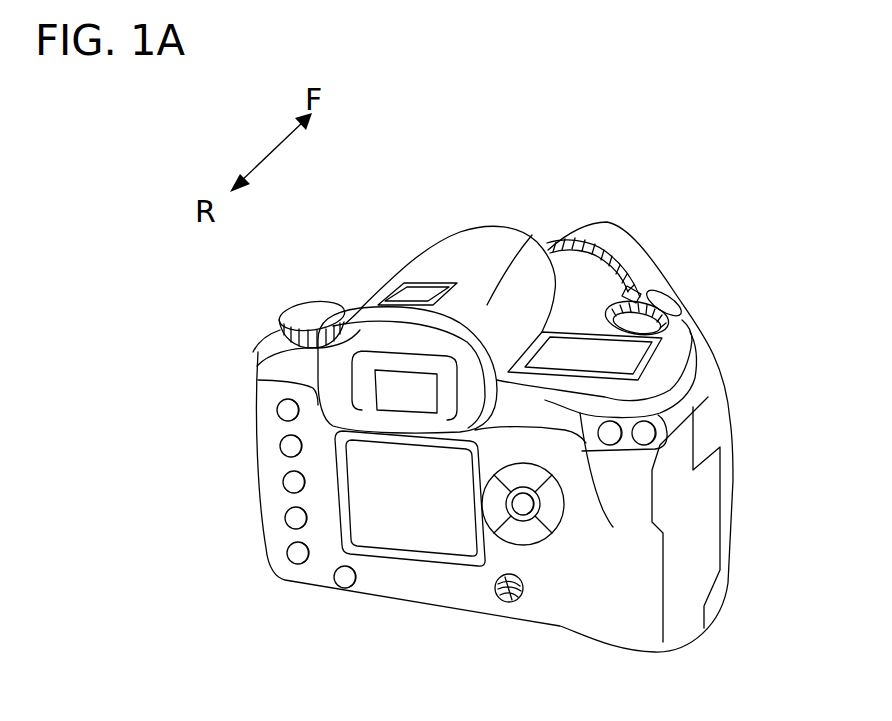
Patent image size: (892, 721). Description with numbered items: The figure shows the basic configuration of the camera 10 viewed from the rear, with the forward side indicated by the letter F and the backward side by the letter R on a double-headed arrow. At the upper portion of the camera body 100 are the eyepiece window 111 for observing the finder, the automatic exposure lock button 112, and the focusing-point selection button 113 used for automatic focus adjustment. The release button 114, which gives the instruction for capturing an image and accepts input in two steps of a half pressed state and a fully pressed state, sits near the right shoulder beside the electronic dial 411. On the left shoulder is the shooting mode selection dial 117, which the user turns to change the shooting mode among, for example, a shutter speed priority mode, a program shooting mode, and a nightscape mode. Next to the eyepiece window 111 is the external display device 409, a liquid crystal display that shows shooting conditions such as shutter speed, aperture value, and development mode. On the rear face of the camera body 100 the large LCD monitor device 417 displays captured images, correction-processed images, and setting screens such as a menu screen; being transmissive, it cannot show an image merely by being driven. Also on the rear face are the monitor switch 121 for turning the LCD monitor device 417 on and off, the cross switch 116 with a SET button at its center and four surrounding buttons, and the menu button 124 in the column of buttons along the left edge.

The camera 10 is at (462, 190).
The camera body 100 is at (262, 363).
The eyepiece window 111 is at (400, 380).
The automatic exposure (AE) lock button 112 is at (618, 450).
The focusing-point selection button 113 is at (650, 440).
The release button 114 is at (672, 296).
The cross switch 116 is at (525, 545).
The shooting mode selection dial 117 is at (312, 304).
The monitor switch 121 is at (297, 556).
The menu button 124 is at (285, 410).
The external display device 409 is at (590, 355).
The electronic dial 411 is at (639, 284).
The LCD monitor device 417 is at (418, 543).